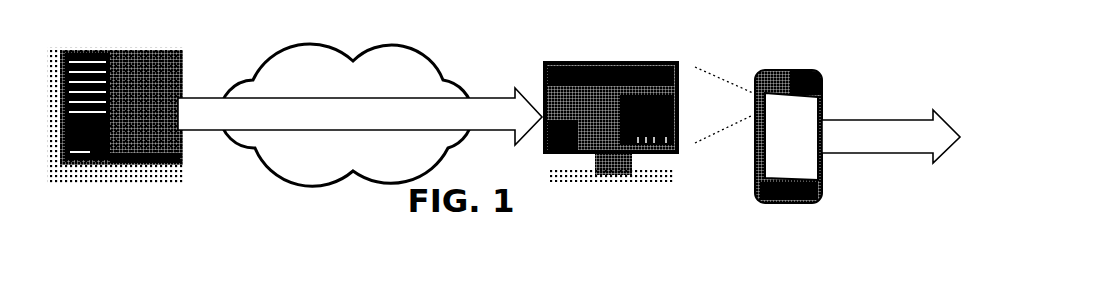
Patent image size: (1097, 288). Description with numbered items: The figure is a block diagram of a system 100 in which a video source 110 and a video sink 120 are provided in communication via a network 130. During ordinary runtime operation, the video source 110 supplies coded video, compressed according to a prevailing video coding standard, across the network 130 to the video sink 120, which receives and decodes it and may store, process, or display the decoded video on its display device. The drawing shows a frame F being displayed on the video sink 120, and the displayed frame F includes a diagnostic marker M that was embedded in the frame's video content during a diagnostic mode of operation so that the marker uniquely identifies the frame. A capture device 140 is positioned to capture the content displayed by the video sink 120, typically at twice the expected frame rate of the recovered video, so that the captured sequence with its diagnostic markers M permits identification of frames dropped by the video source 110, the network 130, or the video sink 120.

The system 100 is at (503, 154).
The video source 110 is at (168, 235).
The video sink 120 is at (588, 145).
The network 130 is at (427, 88).
The capture device 140 is at (788, 167).
The frame F is at (586, 106).
The diagnostic marker M is at (622, 140).